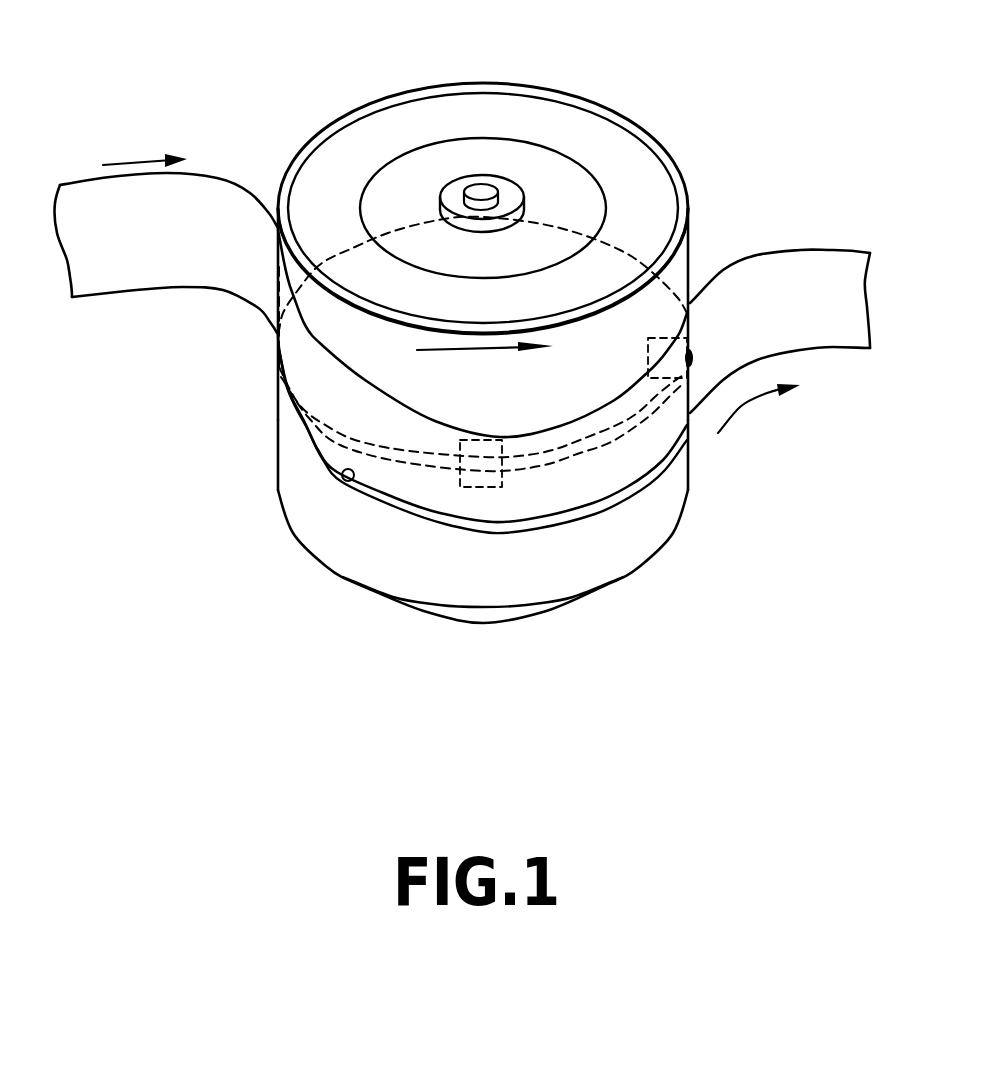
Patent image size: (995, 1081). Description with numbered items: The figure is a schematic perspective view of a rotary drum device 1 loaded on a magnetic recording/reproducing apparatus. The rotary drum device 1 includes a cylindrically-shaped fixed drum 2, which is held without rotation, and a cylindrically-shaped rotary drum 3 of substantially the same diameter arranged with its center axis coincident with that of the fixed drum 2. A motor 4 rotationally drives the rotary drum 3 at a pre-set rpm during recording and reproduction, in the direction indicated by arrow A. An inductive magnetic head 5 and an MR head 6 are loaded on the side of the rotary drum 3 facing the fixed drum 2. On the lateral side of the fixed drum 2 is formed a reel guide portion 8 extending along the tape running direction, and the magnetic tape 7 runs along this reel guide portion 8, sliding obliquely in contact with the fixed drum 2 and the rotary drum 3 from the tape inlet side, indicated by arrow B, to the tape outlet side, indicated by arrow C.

The rotary drum device 1 is at (712, 84).
The fixed drum 2 is at (603, 530).
The rotary drum 3 is at (688, 253).
The motor 4 is at (403, 603).
The inductive magnetic head 5 is at (663, 338).
The MR head 6 is at (480, 465).
The magnetic tape 7 is at (847, 307).
The reel guide portion 8 is at (340, 470).